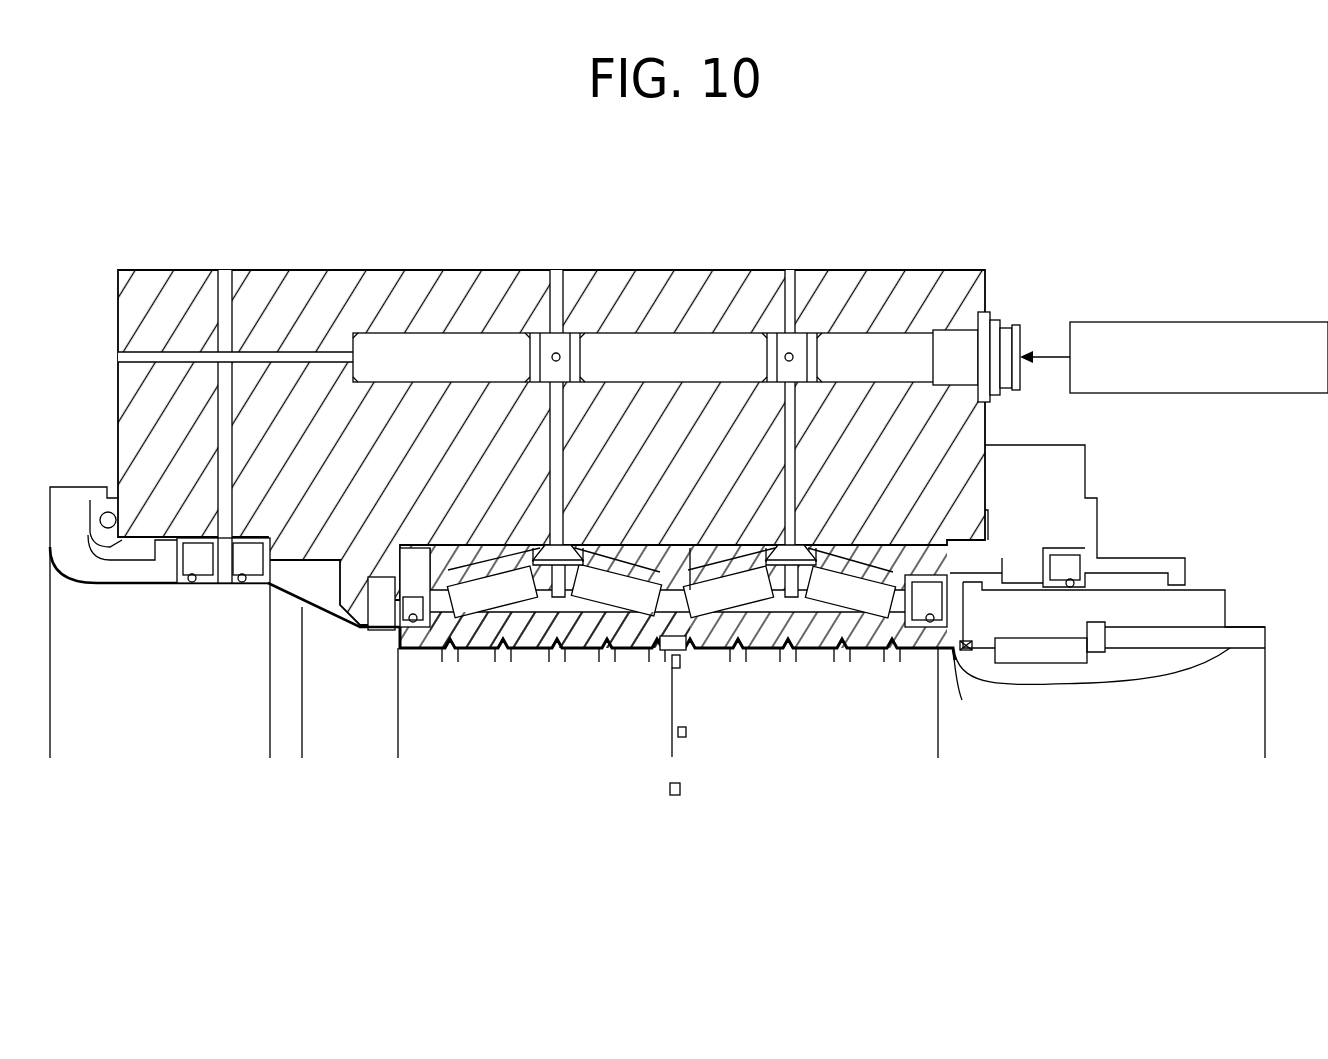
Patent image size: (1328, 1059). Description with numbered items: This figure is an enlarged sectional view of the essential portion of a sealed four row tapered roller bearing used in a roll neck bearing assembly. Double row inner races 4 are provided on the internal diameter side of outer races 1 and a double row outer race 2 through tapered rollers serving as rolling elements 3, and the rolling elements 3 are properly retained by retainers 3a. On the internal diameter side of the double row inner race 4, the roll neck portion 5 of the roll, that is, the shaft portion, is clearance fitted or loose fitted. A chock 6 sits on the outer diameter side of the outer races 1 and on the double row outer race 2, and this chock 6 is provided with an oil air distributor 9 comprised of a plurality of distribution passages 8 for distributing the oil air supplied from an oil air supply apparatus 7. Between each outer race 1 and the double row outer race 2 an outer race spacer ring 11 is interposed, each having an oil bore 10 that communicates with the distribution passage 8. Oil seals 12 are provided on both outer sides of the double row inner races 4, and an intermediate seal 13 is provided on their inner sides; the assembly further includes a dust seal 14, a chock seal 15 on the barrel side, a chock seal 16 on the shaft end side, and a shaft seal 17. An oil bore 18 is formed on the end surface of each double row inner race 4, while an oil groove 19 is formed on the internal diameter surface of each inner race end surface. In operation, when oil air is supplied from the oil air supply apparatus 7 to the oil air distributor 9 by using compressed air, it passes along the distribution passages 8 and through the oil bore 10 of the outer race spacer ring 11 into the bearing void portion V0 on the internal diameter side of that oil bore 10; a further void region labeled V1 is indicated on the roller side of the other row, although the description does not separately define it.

The outer race 1 is at (462, 565).
The double row outer race 2 is at (650, 545).
The rolling element 3 is at (596, 650).
The retainer 3a is at (465, 656).
The double row inner race 4 is at (816, 640).
The roll neck portion 5 is at (870, 655).
The chock 6 is at (616, 270).
The oil air supply apparatus 7 is at (1138, 322).
The distribution passage 8 is at (564, 410).
The oil air distributor 9 is at (893, 322).
The oil bore 10 is at (545, 548).
The outer race spacer ring 11 is at (590, 545).
The oil seal 12 is at (398, 652).
The intermediate seal 13 is at (670, 652).
The dust seal 14 is at (103, 487).
The chock seal 15 is at (205, 585).
The chock seal 16 is at (1080, 548).
The shaft seal 17 is at (990, 660).
The oil bore 18 is at (677, 735).
The oil groove 19 is at (500, 658).
The reference mark V1 is at (553, 657).
The bearing void portion V0 is at (740, 657).